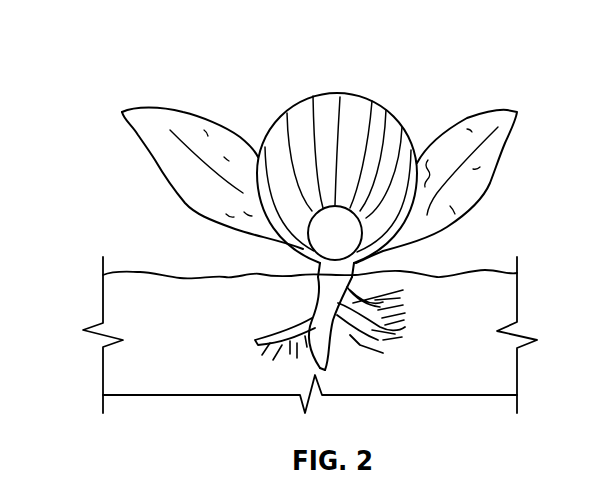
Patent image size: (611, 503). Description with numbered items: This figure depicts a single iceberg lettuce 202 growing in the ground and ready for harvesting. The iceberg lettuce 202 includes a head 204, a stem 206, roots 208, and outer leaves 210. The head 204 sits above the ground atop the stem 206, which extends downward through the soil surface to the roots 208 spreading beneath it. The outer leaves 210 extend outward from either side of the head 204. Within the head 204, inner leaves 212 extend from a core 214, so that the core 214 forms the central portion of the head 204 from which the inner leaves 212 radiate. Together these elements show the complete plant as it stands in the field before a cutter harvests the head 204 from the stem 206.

The iceberg lettuce 202 is at (110, 90).
The head 204 is at (327, 93).
The stem 206 is at (303, 278).
The roots 208 is at (377, 302).
The outer leaves 210 is at (500, 147).
The inner leaves 212 is at (335, 220).
The core 214 is at (317, 115).